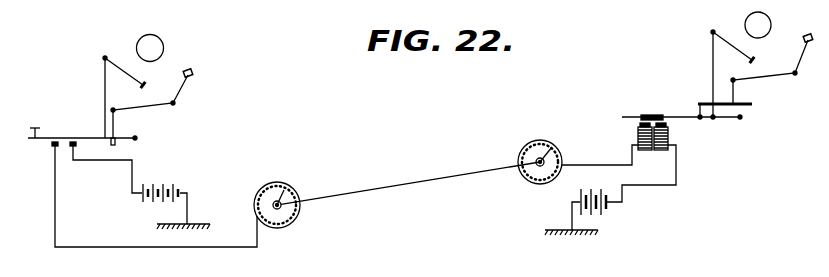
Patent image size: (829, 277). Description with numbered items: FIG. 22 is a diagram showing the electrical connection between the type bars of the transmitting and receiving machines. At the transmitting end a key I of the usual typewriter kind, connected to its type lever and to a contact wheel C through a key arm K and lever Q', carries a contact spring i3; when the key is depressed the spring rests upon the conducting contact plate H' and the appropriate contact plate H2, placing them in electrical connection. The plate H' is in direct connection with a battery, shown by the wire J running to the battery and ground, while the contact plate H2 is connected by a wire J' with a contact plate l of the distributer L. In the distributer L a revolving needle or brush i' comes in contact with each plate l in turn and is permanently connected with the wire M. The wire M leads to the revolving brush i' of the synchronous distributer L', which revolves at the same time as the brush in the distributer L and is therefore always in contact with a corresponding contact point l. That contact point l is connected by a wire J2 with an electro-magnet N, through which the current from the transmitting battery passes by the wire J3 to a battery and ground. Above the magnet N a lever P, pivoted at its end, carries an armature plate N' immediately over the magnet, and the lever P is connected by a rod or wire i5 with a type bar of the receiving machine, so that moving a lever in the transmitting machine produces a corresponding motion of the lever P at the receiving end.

The contact wheel C is at (164, 46).
The key arm K is at (428, 59).
The lever Q' is at (462, 89).
The rod or wire i5 is at (105, 95).
The key I is at (88, 124).
The contact plate H2 is at (53, 146).
The conducting contact plate H' is at (86, 150).
The contact spring i3 is at (64, 146).
The wire J is at (107, 168).
The wire J' is at (156, 196).
The distributer L is at (277, 197).
The pointer i' is at (430, 170).
The contact plate l is at (296, 213).
The wire M is at (395, 189).
The synchronous distributer L' is at (540, 151).
The wire J2 is at (600, 155).
The electro-magnet N is at (667, 136).
The armature plate N' is at (650, 105).
The lever P is at (687, 109).
The wire J3 is at (676, 171).